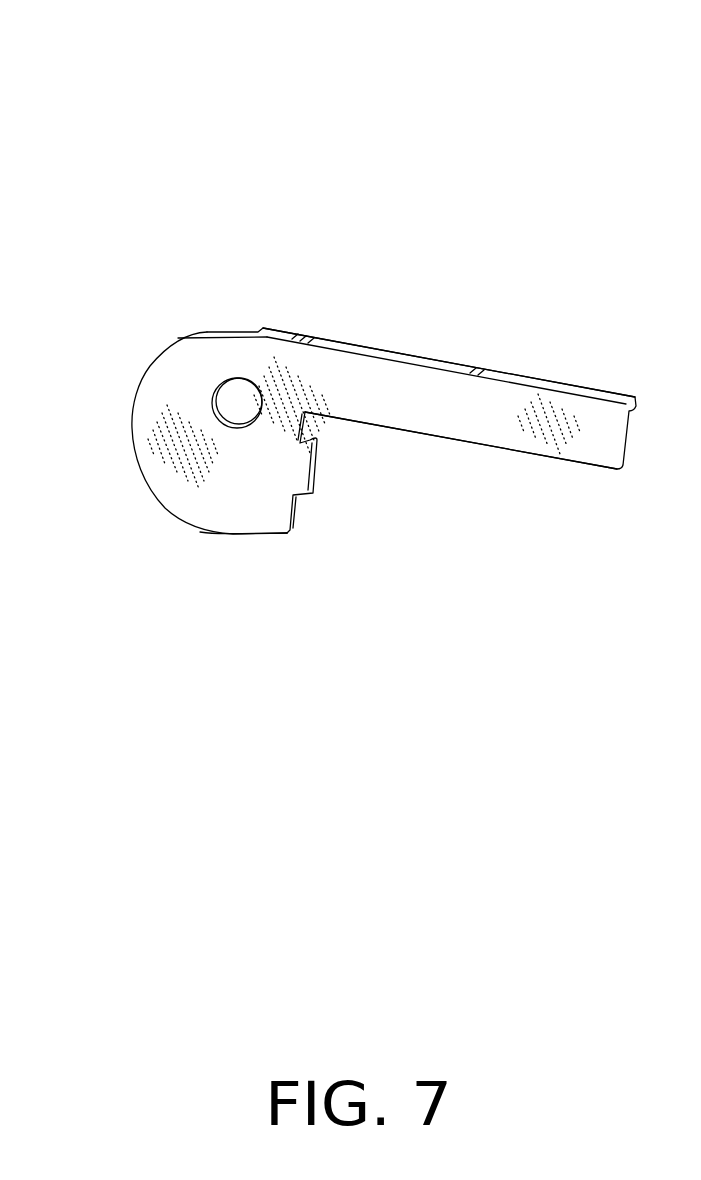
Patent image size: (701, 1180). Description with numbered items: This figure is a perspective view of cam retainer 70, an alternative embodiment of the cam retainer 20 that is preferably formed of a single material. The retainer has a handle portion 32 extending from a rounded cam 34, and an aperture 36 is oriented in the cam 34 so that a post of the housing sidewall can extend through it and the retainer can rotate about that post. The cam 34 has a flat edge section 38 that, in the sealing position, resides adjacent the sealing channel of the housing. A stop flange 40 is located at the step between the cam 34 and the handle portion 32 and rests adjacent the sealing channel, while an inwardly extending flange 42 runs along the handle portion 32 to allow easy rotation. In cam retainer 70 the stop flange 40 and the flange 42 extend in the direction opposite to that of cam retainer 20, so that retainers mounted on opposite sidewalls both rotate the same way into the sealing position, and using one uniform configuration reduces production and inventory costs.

The cam retainer 70 is at (564, 146).
The cam retainer 20 is at (515, 422).
The handle portion 32 is at (353, 388).
The cam 34 is at (130, 425).
The aperture 36 is at (230, 379).
The flat edge section 38 is at (235, 535).
The stop flange 40 is at (312, 463).
The inwardly extending flange 42 is at (445, 365).